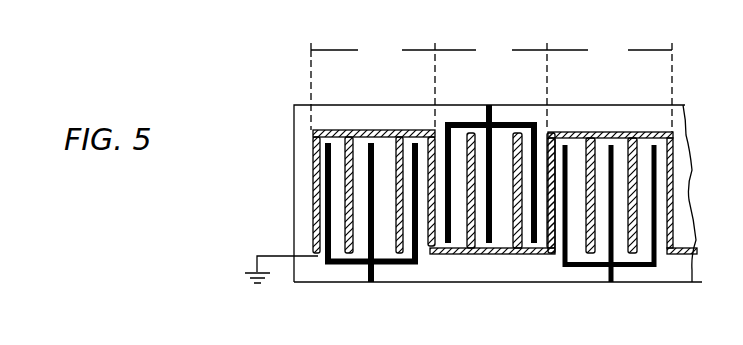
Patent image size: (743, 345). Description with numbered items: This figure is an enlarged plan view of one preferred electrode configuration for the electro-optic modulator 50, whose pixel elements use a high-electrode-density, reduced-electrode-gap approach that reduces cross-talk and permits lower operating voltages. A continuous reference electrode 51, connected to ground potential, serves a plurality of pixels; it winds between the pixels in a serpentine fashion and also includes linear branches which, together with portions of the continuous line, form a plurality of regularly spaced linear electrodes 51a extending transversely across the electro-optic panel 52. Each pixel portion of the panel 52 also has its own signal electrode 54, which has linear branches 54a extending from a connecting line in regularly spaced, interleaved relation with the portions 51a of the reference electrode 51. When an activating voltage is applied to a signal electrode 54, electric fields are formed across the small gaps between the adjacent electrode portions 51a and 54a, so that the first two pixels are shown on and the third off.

The modulator 50 is at (262, 88).
The continuous reference electrode 51 is at (469, 199).
The linear electrodes 51a is at (313, 172).
The electro-optic panel 52 is at (471, 269).
The signal electrode 54 is at (364, 262).
The linear branches 54a is at (322, 262).